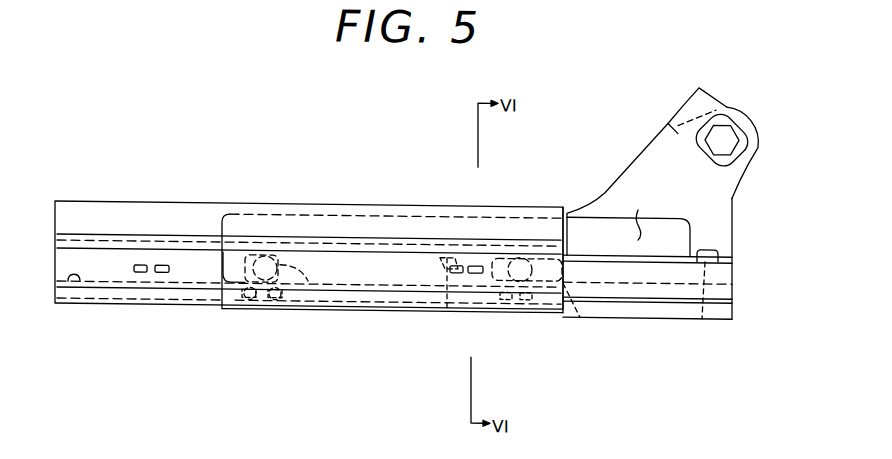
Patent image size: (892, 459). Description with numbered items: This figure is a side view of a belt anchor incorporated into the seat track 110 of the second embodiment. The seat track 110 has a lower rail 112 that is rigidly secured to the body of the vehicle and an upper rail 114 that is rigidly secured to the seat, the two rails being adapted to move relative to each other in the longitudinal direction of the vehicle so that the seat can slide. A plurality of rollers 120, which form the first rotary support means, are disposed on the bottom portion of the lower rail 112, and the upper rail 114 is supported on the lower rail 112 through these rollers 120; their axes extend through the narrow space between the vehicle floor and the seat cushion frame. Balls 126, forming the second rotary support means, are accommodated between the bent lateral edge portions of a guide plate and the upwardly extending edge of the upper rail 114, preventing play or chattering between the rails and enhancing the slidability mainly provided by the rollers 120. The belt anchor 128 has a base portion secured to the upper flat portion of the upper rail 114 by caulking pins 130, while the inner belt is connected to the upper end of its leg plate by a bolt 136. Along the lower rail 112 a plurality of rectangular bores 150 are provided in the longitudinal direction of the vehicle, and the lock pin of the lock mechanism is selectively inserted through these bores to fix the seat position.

The seat track 110 is at (548, 130).
The lower rail 112 is at (100, 194).
The upper rail 114 is at (735, 270).
The rollers 120 is at (572, 294).
The balls 126 is at (275, 302).
The belt anchor 128 is at (648, 146).
The caulking pins 130 is at (245, 310).
The bolt 136 is at (728, 117).
The rectangular bores 150 is at (141, 264).